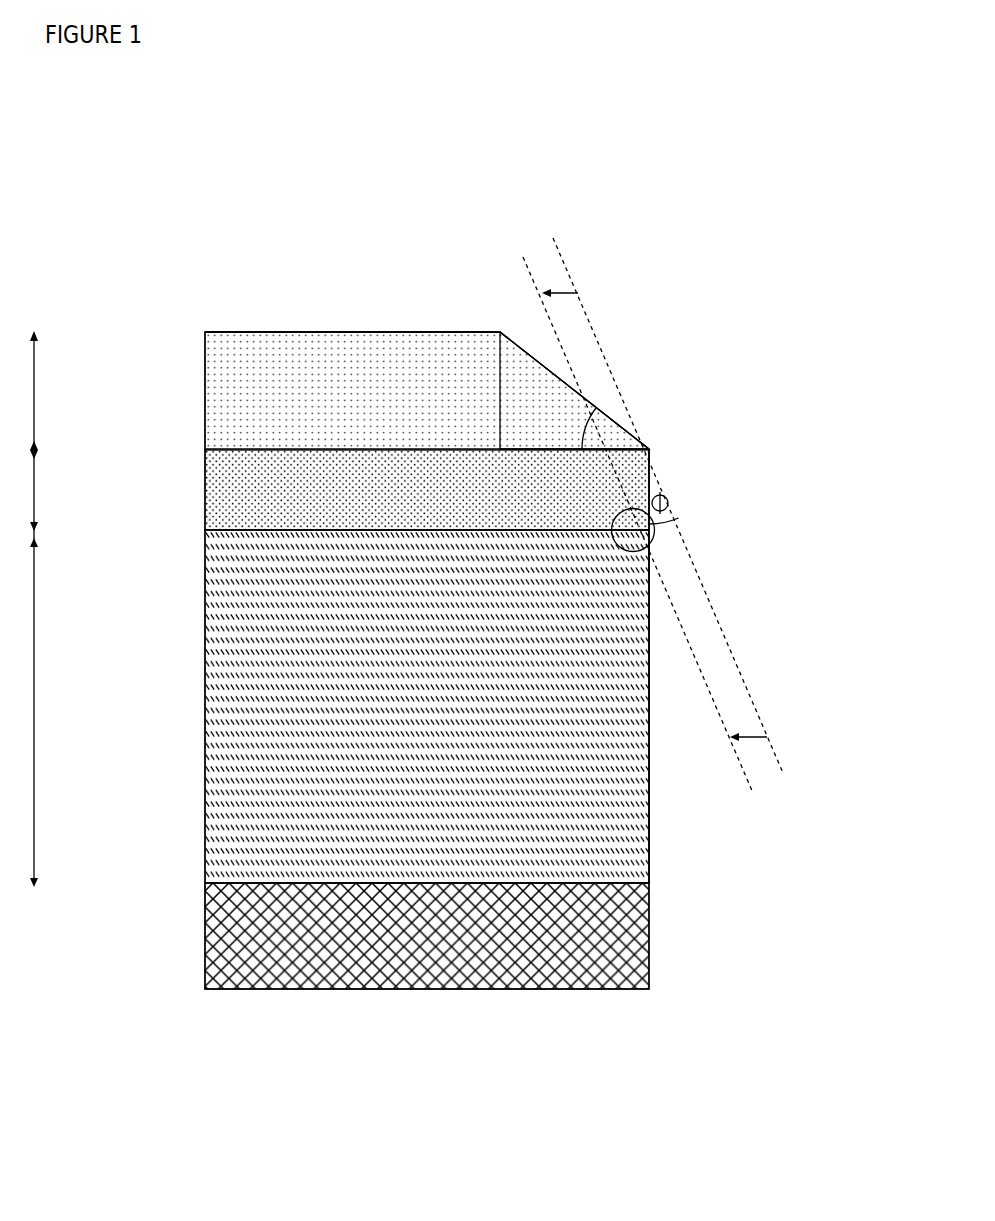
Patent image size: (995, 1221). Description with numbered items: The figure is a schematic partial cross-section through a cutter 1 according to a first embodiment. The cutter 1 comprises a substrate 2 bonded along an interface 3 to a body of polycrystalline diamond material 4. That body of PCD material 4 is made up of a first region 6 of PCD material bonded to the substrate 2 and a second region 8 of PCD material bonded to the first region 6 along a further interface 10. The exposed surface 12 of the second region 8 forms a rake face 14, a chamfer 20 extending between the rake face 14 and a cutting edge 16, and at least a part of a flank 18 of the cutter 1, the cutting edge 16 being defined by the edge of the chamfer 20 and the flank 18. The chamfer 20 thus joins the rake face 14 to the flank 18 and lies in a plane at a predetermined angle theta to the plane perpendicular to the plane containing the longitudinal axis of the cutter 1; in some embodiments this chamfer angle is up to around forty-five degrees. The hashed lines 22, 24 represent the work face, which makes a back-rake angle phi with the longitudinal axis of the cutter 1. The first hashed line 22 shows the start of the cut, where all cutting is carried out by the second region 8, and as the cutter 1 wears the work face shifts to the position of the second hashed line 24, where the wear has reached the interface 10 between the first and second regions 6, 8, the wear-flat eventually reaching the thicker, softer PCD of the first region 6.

The cutter 1 is at (265, 996).
The substrate 2 is at (650, 940).
The interface 3 is at (223, 890).
The body of polycrystalline diamond material 4 is at (205, 742).
The first region of PCD material 6 is at (630, 850).
The second region of PCD material 8 is at (228, 478).
The further interface 10 is at (238, 540).
The exposed surface 12 is at (223, 332).
The rake face 14 is at (423, 333).
The cutting edge 16 is at (651, 447).
The flank 18 is at (652, 486).
The chamfer 20 is at (533, 357).
The first hashed line 22 is at (777, 750).
The second hashed line 24 is at (747, 770).